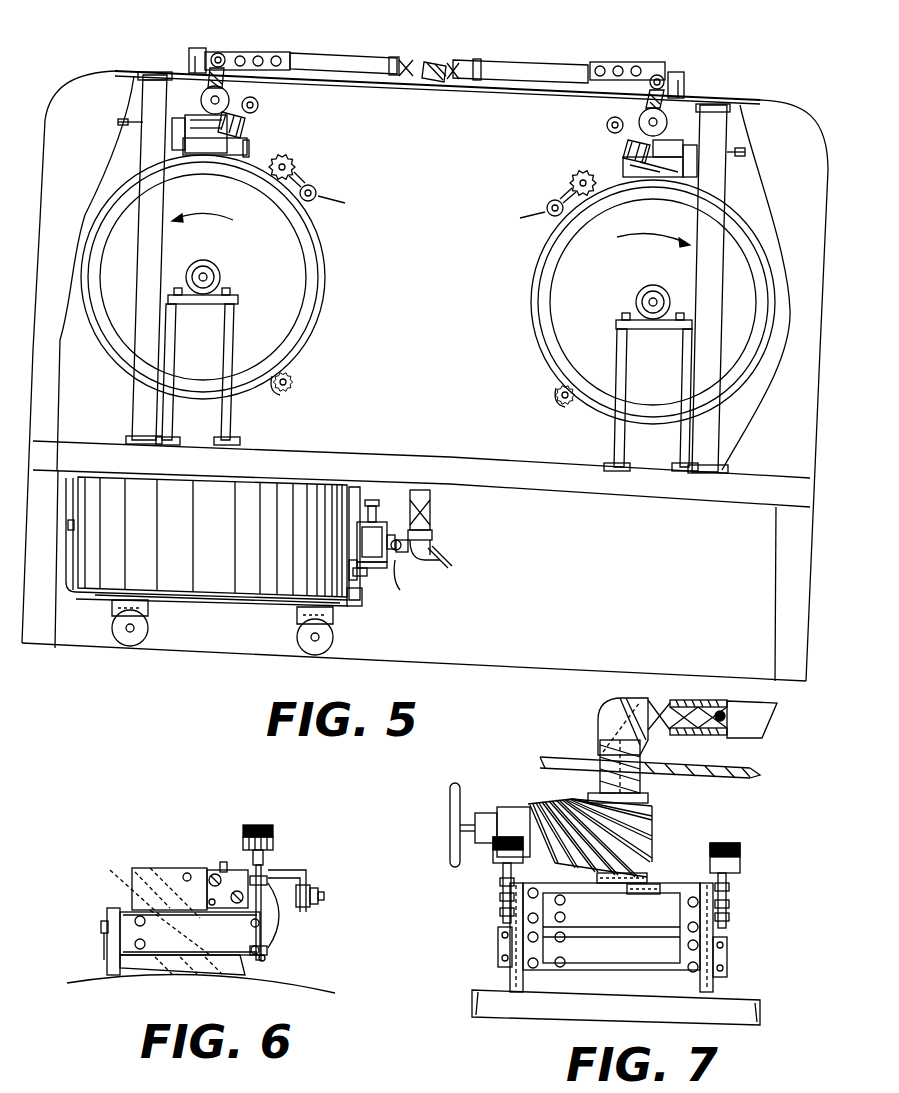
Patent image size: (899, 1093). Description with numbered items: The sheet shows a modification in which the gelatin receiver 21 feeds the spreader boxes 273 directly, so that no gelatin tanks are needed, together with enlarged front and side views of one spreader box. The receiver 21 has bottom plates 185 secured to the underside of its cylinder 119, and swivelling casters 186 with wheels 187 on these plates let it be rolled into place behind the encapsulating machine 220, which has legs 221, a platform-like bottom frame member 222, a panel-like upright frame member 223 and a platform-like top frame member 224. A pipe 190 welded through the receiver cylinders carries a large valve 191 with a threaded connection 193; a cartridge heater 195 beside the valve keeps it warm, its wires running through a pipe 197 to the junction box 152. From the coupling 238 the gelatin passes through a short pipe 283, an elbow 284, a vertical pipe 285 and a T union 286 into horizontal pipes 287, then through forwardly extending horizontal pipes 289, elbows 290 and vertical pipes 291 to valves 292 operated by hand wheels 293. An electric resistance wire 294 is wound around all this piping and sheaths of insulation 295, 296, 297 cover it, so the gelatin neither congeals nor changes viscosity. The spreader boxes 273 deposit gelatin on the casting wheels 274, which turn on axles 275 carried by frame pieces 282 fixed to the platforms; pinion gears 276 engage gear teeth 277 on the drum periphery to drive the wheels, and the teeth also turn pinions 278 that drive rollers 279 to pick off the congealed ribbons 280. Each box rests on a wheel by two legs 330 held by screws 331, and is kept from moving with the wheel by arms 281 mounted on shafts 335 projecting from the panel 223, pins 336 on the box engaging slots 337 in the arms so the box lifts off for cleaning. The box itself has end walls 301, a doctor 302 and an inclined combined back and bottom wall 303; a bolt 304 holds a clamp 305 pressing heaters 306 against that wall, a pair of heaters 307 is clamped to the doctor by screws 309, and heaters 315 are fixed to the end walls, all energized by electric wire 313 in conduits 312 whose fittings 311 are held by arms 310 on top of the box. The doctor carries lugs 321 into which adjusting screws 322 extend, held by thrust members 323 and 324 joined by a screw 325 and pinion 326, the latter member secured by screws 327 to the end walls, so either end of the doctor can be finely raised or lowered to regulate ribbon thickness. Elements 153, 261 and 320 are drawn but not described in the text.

In FIG. 5, the receiver 21 is at (256, 607).
In FIG. 5, the cylinder 119 is at (176, 580).
In FIG. 5, the junction box 152 is at (355, 606).
In FIG. 5, the left bracket 153 is at (85, 598).
In FIG. 5, the bottom plates 185 is at (278, 607).
In FIG. 5, the swivelling casters 186 is at (118, 624).
In FIG. 5, the wheels 187 is at (150, 632).
In FIG. 5, the pipe 190 is at (352, 505).
In FIG. 5, the valve 191 is at (370, 528).
In FIG. 5, the threaded connection 193 is at (396, 560).
In FIG. 5, the cartridge heater 195 is at (367, 568).
In FIG. 5, the pipe 197 is at (355, 580).
In FIG. 5, the encapsulating machine 220 is at (678, 508).
In FIG. 5, the legs 221 is at (42, 632).
In FIG. 5, the bottom frame member 222 is at (590, 487).
In FIG. 5, the upright frame member 223 is at (778, 133).
In FIG. 5, the top frame member 224 is at (472, 104).
In FIG. 7, the top frame member 224 is at (745, 775).
In FIG. 5, the coupling 238 is at (410, 565).
In FIG. 5, the valve 261 is at (400, 523).
In FIG. 5, the spreader boxes 273 is at (252, 125).
In FIG. 6, the spreader boxes 273 is at (292, 947).
In FIG. 7, the spreader boxes 273 is at (732, 960).
In FIG. 5, the casting wheels 274 is at (537, 299).
In FIG. 6, the casting wheels 274 is at (320, 996).
In FIG. 5, the axles 275 is at (212, 275).
In FIG. 5, the pinion gears 276 is at (285, 396).
In FIG. 5, the gear teeth 277 is at (277, 183).
In FIG. 5, the pinions 278 is at (292, 164).
In FIG. 5, the rollers 279 is at (330, 187).
In FIG. 5, the ribbons 280 is at (778, 376).
In FIG. 5, the arms 281 is at (245, 125).
In FIG. 5, the frame pieces 282 is at (207, 303).
In FIG. 5, the short pipe 283 is at (400, 560).
In FIG. 5, the elbow 284 is at (432, 545).
In FIG. 5, the vertical pipe 285 is at (425, 513).
In FIG. 5, the T union 286 is at (445, 66).
In FIG. 5, the horizontal pipes 287 is at (282, 52).
In FIG. 5, the forwardly extending horizontal pipes 289 is at (225, 53).
In FIG. 7, the forwardly extending horizontal pipes 289 is at (722, 712).
In FIG. 5, the elbows 290 is at (212, 48).
In FIG. 7, the elbows 290 is at (610, 712).
In FIG. 5, the vertical pipes 291 is at (203, 72).
In FIG. 7, the vertical pipes 291 is at (600, 780).
In FIG. 5, the valves 292 is at (229, 98).
In FIG. 7, the valves 292 is at (650, 840).
In FIG. 5, the hand wheels 293 is at (185, 88).
In FIG. 7, the hand wheels 293 is at (450, 797).
In FIG. 5, the electric resistance wire 294 is at (408, 62).
In FIG. 7, the electric resistance wire 294 is at (545, 805).
In FIG. 5, the sheath of insulation 295 is at (433, 490).
In FIG. 5, the sheath of insulation 296 is at (362, 50).
In FIG. 7, the sheath of insulation 297 is at (762, 715).
In FIG. 6, the end walls 301 is at (140, 873).
In FIG. 7, the end walls 301 is at (510, 978).
In FIG. 5, the doctor 302 is at (215, 135).
In FIG. 7, the doctor 302 is at (636, 975).
In FIG. 6, the combined back and bottom wall 303 is at (205, 962).
In FIG. 6, the bolt 304 is at (150, 965).
In FIG. 6, the clamp 305 is at (180, 965).
In FIG. 6, the heaters 306 is at (130, 890).
In FIG. 6, the heaters 307 is at (268, 878).
In FIG. 7, the heaters 307 is at (595, 995).
In FIG. 6, the screws 309 is at (265, 962).
In FIG. 7, the screws 309 is at (536, 891).
In FIG. 6, the arms 310 is at (305, 868).
In FIG. 7, the arms 310 is at (652, 884).
In FIG. 6, the fittings 311 is at (320, 900).
In FIG. 5, the conduits 312 is at (130, 124).
In FIG. 6, the conduits 312 is at (318, 890).
In FIG. 6, the electric wire 313 is at (282, 922).
In FIG. 5, the heaters 315 is at (207, 156).
In FIG. 6, the heaters 315 is at (190, 933).
In FIG. 7, the heaters 315 is at (498, 948).
In FIG. 6, the pin 320 is at (250, 970).
In FIG. 6, the lugs 321 is at (232, 895).
In FIG. 7, the lugs 321 is at (500, 915).
In FIG. 6, the adjusting screws 322 is at (273, 830).
In FIG. 7, the adjusting screws 322 is at (503, 866).
In FIG. 6, the thrust member 323 is at (262, 870).
In FIG. 7, the thrust member 323 is at (500, 882).
In FIG. 6, the thrust member 324 is at (223, 864).
In FIG. 7, the thrust member 324 is at (500, 897).
In FIG. 6, the screw 325 is at (256, 825).
In FIG. 6, the pinion 326 is at (214, 875).
In FIG. 6, the screws 327 is at (184, 874).
In FIG. 5, the legs 330 is at (250, 150).
In FIG. 6, the legs 330 is at (108, 953).
In FIG. 7, the legs 330 is at (504, 1000).
In FIG. 6, the screws 331 is at (100, 922).
In FIG. 5, the shafts 335 is at (258, 104).
In FIG. 5, the pins 336 is at (630, 152).
In FIG. 6, the pins 336 is at (160, 880).
In FIG. 5, the slots 337 is at (222, 160).